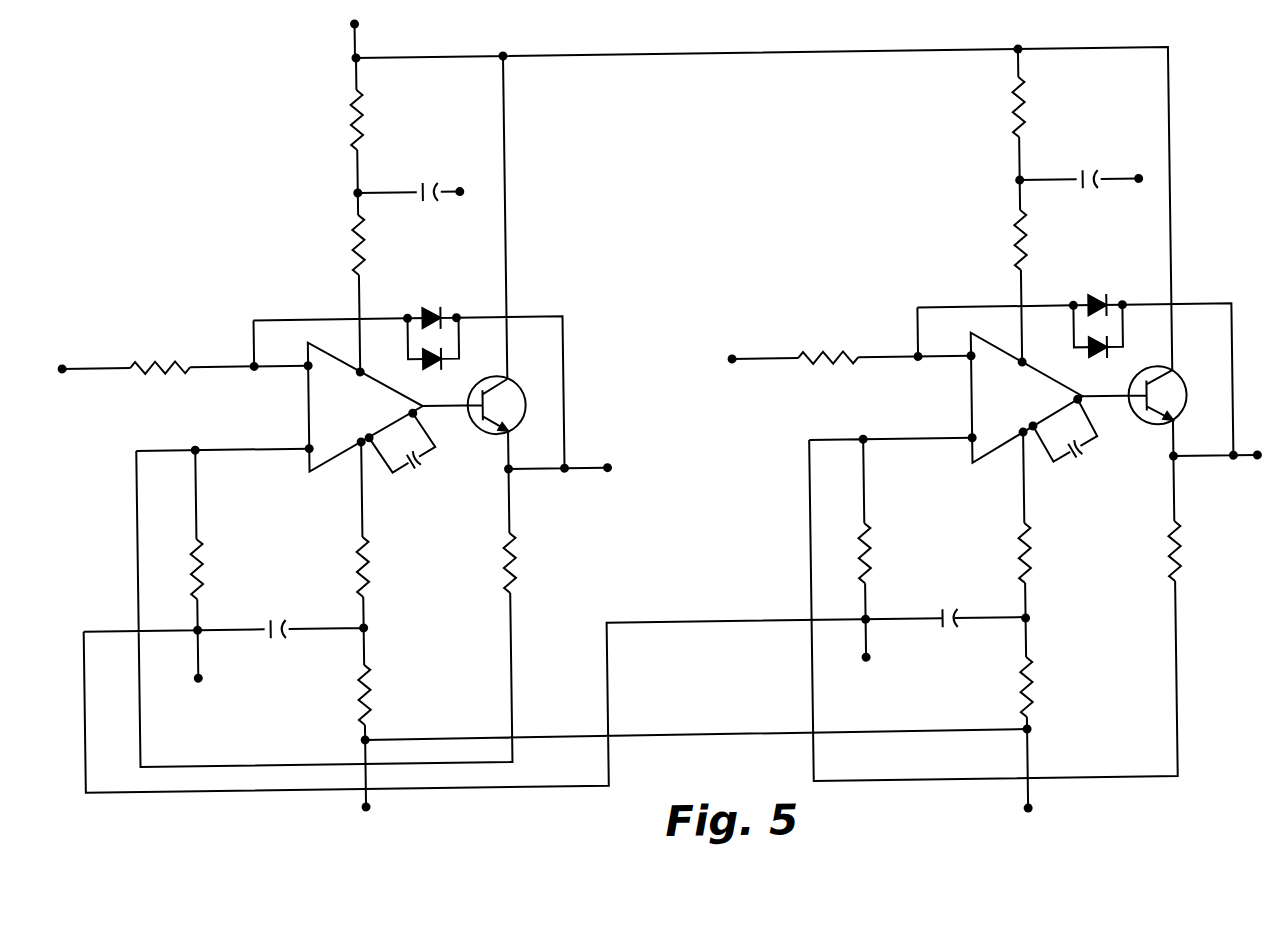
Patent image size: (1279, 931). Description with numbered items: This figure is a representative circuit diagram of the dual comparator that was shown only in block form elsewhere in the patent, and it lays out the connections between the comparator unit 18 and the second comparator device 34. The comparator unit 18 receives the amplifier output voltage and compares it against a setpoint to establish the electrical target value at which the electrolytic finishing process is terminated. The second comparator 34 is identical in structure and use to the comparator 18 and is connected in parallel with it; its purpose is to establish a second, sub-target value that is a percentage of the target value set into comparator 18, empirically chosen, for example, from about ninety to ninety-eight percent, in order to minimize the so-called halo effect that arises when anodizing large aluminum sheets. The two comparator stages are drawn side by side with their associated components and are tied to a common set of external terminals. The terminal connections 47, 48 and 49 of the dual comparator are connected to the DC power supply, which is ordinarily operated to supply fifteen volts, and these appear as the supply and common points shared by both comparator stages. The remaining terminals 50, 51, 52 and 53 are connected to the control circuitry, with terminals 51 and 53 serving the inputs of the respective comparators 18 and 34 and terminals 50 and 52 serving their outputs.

The comparator unit 18 is at (334, 299).
The second comparator device 34 is at (1004, 302).
The terminal connection 47 is at (361, 25).
The terminal connection 48 is at (360, 807).
The terminal connection 49 is at (458, 191).
The terminal 50 is at (602, 469).
The terminal 51 is at (62, 357).
The terminal 52 is at (1252, 469).
The terminal 53 is at (728, 361).